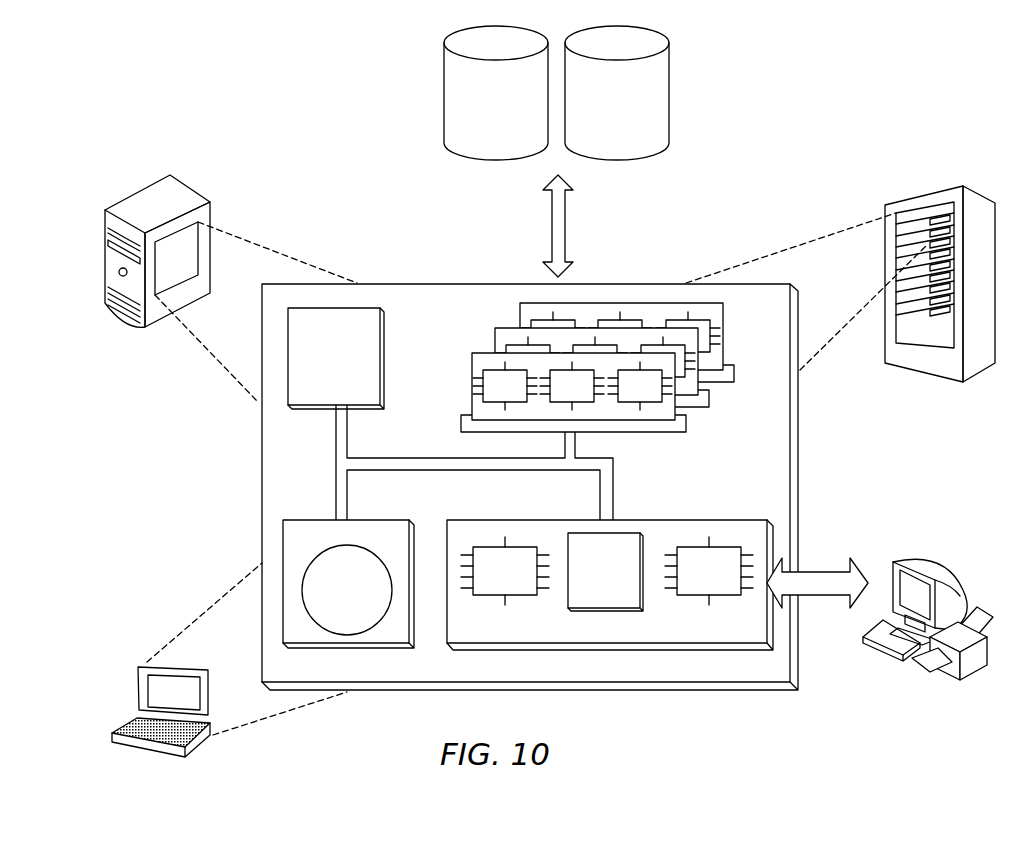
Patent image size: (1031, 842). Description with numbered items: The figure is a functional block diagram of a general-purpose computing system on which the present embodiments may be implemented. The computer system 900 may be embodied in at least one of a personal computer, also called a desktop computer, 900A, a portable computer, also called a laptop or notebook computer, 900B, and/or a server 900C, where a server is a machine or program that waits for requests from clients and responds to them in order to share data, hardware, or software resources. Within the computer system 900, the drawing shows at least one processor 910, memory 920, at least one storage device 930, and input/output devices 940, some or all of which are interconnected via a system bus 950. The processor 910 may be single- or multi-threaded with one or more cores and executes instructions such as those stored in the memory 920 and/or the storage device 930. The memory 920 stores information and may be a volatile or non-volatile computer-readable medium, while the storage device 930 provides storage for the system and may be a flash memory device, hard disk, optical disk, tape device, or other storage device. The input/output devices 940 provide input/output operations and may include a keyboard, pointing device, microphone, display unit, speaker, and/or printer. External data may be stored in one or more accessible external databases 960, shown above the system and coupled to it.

The computer system 900 is at (403, 221).
The personal computer 900A is at (190, 187).
The portable computer 900B is at (172, 665).
The server 900C is at (923, 195).
The processor 910 is at (370, 320).
The memory 920 is at (715, 414).
The storage device 930 is at (395, 628).
The input/output devices 940 is at (893, 558).
The system bus 950 is at (487, 472).
The external databases 960 is at (512, 109).